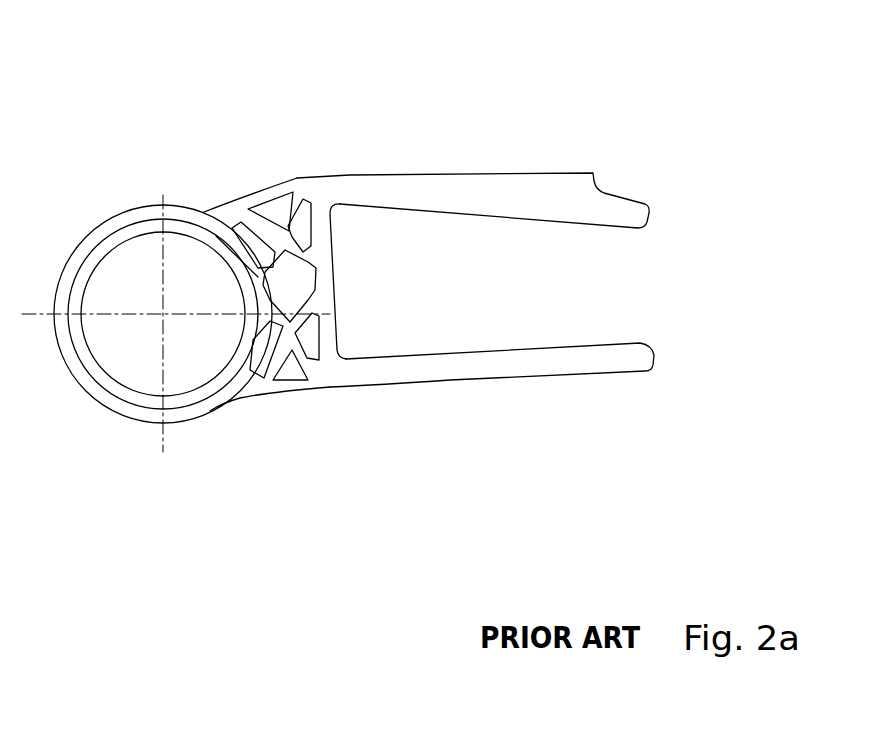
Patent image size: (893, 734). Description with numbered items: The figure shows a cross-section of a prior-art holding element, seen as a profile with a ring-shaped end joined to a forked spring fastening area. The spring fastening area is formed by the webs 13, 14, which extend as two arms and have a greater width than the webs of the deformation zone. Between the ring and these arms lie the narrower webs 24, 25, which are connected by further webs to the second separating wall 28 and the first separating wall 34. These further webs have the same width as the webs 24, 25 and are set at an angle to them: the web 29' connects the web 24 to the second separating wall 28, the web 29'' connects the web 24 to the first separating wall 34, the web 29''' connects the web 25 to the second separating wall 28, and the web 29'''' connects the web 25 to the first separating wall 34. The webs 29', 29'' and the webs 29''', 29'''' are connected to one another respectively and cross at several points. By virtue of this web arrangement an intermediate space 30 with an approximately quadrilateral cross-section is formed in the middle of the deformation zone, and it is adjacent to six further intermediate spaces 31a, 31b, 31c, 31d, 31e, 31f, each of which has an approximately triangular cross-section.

The web 13 is at (518, 354).
The web 14 is at (502, 198).
The web 24 is at (258, 197).
The web 25 is at (293, 366).
The second separating wall 28 is at (250, 303).
The web 29' is at (315, 118).
The web 29'' is at (200, 164).
The web 29''' is at (353, 445).
The web 29'''' is at (243, 472).
The intermediate space 30 is at (297, 283).
The intermediate space 31a is at (240, 214).
The intermediate space 31b is at (277, 207).
The intermediate space 31c is at (317, 222).
The intermediate space 31d is at (262, 343).
The intermediate space 31e is at (299, 374).
The intermediate space 31f is at (318, 340).
The first separating wall 34 is at (325, 323).